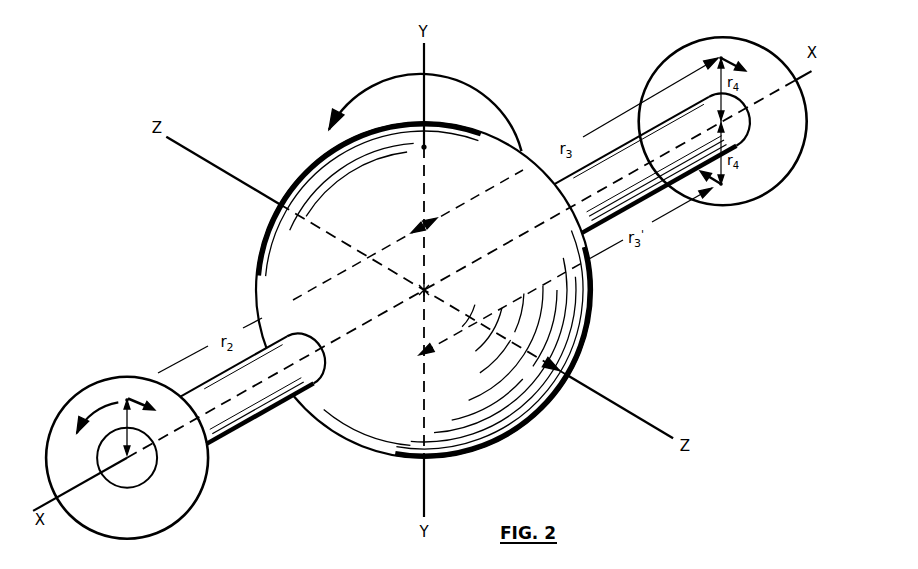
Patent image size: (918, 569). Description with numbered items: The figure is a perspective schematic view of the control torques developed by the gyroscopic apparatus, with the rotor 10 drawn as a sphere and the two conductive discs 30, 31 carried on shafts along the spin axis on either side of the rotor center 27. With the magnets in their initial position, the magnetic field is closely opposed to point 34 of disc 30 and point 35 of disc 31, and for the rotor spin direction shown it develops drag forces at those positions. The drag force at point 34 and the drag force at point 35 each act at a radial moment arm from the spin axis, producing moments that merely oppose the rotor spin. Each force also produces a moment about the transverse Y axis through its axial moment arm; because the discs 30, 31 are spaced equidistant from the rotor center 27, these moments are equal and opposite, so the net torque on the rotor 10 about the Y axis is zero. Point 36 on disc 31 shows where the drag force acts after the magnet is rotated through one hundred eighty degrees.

The rotor 10 is at (524, 163).
The rotor center 27 is at (427, 286).
The disc 30 is at (88, 391).
The disc 31 is at (763, 47).
The point of disc 30 34 is at (128, 398).
The point of disc 31 35 is at (721, 57).
The point on disc 31 36 is at (723, 184).